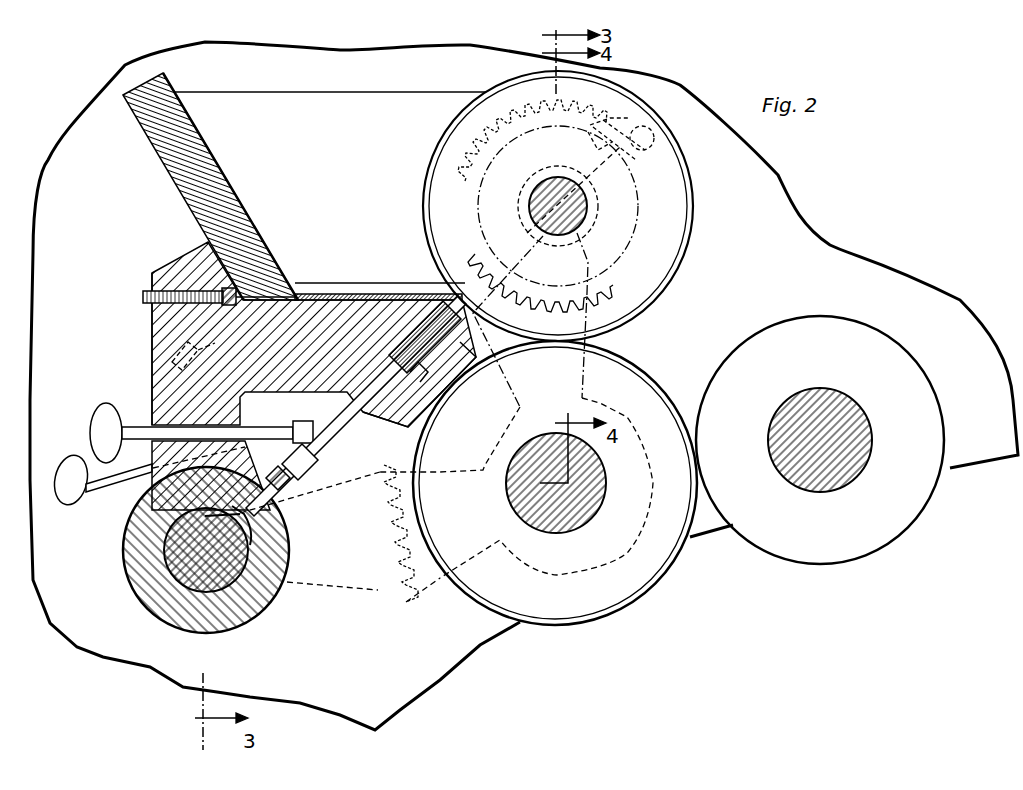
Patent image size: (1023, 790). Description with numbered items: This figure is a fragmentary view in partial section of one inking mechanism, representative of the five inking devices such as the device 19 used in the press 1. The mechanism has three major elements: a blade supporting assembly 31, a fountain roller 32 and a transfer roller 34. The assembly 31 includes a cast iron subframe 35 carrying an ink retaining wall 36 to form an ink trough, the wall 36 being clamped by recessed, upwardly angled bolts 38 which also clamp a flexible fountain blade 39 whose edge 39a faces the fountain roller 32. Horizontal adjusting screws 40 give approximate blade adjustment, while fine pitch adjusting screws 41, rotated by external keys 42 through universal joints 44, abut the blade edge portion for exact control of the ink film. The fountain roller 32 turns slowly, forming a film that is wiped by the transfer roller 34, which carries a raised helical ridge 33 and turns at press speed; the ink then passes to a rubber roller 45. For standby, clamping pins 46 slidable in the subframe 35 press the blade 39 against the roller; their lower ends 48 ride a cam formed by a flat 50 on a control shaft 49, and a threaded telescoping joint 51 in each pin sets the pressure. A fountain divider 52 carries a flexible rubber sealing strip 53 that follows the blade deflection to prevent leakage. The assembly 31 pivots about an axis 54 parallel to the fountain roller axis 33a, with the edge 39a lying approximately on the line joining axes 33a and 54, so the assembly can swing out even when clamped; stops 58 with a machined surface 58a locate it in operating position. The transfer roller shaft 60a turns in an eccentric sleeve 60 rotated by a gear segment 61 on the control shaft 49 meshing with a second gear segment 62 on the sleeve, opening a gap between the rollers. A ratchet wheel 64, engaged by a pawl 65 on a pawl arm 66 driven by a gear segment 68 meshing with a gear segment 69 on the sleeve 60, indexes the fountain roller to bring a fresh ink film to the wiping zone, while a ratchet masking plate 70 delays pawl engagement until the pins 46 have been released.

The apparatus 1 is at (28, 252).
The inking device 19 is at (100, 173).
The blade supporting assembly 31 is at (142, 327).
The fountain roller 32 is at (692, 182).
The raised helical ridge 33 is at (662, 580).
The axis of the fountain roller 33a is at (558, 206).
The transfer roller 34 is at (622, 602).
The subframe 35 is at (322, 293).
The ink retaining wall 36 is at (172, 158).
The bolts 38 is at (218, 343).
The fountain blade 39 is at (395, 294).
The edge of the fountain blade 39a is at (478, 300).
The horizontal adjusting screws 40 is at (148, 292).
The adjusting screws 41 is at (410, 345).
The keys 42 is at (92, 433).
The universal joints 44 is at (307, 424).
The rubber roller 45 is at (924, 370).
The clamping pins 46 is at (392, 368).
The lower ends of the pins 48 is at (211, 475).
The control shaft 49 is at (170, 560).
The flat 50 is at (250, 540).
The threaded telescoping joint 51 is at (310, 469).
The fountain divider 52 is at (388, 102).
The flexible rubber sealing strip 53 is at (308, 283).
The axis of bodily rotation 54 is at (206, 550).
The stops 58 is at (405, 414).
The machined surface 58a is at (431, 377).
The eccentric sleeve 60 is at (590, 564).
The shaft of the transfer roller 60a is at (578, 516).
The gear segment 61 is at (364, 594).
The second gear segment 62 is at (436, 594).
The ratchet wheel 64 is at (530, 140).
The pawl 65 is at (620, 125).
The pawl arm 66 is at (577, 192).
The gear segment 68 is at (610, 275).
The gear segment 69 is at (600, 297).
The ratchet masking plate 70 is at (598, 130).